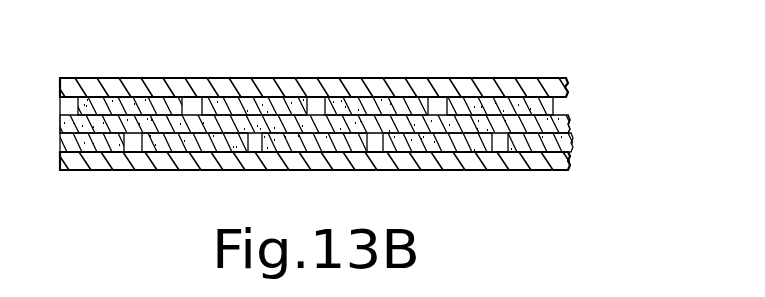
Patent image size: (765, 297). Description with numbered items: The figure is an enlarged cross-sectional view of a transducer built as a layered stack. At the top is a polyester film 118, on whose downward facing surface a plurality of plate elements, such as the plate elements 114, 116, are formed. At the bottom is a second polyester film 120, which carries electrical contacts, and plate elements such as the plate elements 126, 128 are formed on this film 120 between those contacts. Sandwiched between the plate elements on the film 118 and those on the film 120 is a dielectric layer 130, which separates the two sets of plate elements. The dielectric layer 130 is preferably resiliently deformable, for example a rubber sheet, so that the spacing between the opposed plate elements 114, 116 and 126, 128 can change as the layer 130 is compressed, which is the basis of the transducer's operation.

The plate element 114 is at (245, 88).
The plate element 116 is at (395, 88).
The polyester film 118 is at (427, 87).
The second polyester film 120 is at (467, 168).
The plate element 126 is at (195, 148).
The plate element 128 is at (317, 147).
The dielectric layer 130 is at (572, 127).